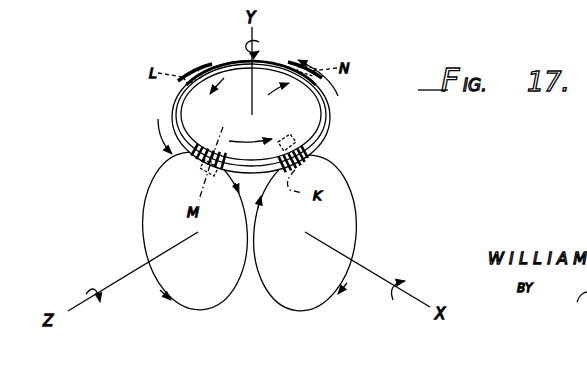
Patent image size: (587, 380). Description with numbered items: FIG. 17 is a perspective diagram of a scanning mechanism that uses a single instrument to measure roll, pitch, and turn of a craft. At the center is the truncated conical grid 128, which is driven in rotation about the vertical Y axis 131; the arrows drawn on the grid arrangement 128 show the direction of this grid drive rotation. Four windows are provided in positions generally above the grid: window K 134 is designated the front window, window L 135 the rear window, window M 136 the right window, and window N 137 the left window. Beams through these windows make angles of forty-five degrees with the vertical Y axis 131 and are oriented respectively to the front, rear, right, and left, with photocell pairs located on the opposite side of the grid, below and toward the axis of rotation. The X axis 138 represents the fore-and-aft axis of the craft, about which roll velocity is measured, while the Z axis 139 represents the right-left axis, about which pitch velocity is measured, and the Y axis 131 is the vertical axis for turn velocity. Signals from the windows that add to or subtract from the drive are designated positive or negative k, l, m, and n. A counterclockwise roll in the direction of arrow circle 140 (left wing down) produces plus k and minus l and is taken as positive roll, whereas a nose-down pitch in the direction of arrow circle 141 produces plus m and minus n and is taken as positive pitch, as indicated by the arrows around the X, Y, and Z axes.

The truncated conical grid 128 is at (338, 120).
The vertical Y axis 131 is at (257, 40).
The window K 134 is at (312, 167).
The window L 135 is at (186, 74).
The window M 136 is at (217, 153).
The window N 137 is at (293, 60).
The X axis 138 is at (374, 273).
The Z axis 139 is at (136, 266).
The arrow circle for counterclockwise roll 140 is at (355, 216).
The arrow circle for pitch 141 is at (150, 201).